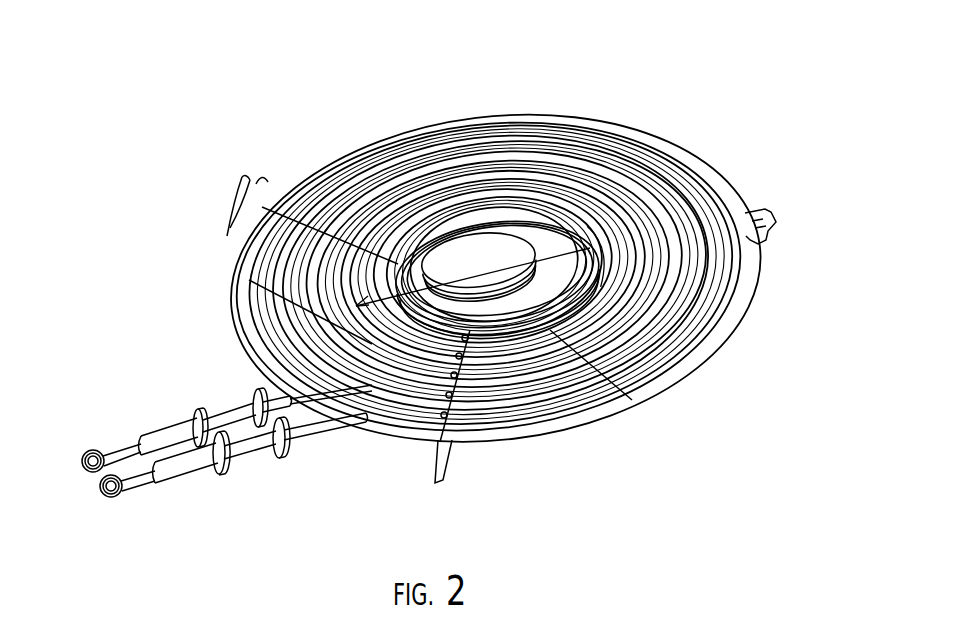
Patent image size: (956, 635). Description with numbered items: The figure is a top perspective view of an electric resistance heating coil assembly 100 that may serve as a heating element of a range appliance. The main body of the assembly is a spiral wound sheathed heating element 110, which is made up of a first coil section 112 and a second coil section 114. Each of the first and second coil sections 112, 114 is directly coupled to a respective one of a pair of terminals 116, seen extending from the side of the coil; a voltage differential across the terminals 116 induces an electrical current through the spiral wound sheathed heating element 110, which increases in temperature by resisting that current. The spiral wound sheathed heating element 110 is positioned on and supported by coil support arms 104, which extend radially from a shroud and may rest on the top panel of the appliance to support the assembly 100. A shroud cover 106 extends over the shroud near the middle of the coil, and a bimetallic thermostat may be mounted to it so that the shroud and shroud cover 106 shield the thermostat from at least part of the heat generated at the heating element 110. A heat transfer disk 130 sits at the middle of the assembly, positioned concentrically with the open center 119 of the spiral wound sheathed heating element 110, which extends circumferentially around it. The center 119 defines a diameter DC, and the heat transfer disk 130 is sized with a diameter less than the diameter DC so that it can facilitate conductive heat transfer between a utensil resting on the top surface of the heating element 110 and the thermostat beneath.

The electric resistance heating coil assembly 100 is at (783, 104).
The coil support arms 104 is at (246, 178).
The shroud cover 106 is at (537, 247).
The spiral wound sheathed heating element 110 is at (727, 332).
The first coil section 112 is at (290, 404).
The second coil section 114 is at (323, 438).
The terminals 116 is at (104, 451).
The center 119 is at (632, 400).
The heat transfer disk 130 is at (500, 243).
The diameter of center DC is at (472, 266).